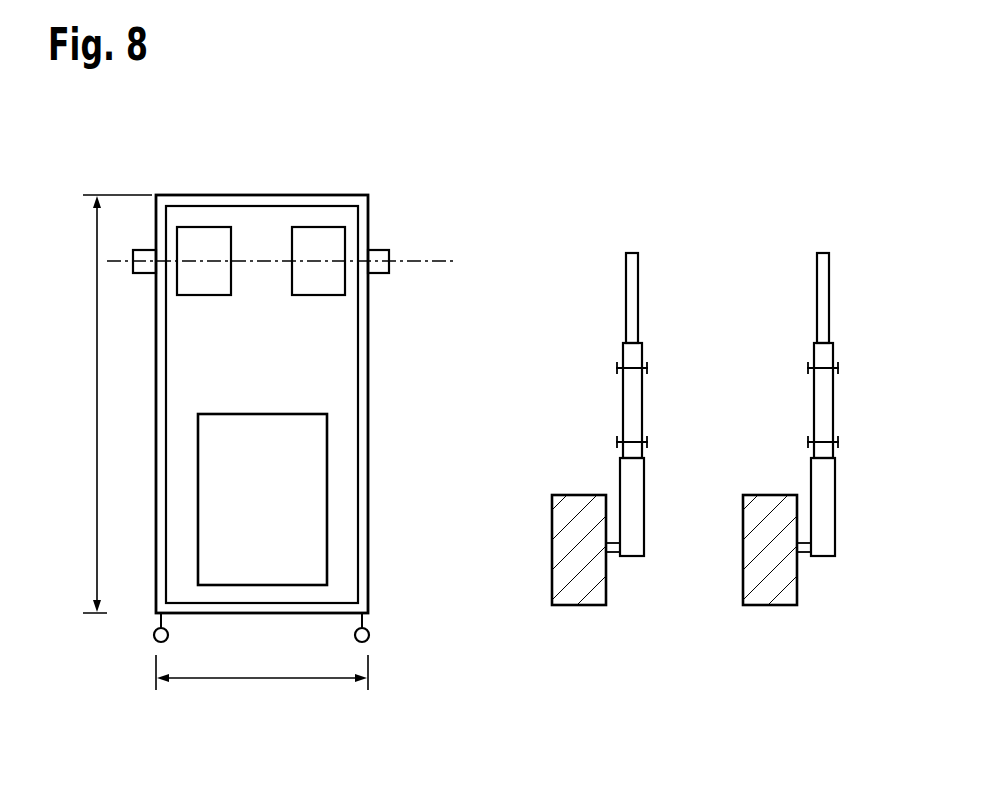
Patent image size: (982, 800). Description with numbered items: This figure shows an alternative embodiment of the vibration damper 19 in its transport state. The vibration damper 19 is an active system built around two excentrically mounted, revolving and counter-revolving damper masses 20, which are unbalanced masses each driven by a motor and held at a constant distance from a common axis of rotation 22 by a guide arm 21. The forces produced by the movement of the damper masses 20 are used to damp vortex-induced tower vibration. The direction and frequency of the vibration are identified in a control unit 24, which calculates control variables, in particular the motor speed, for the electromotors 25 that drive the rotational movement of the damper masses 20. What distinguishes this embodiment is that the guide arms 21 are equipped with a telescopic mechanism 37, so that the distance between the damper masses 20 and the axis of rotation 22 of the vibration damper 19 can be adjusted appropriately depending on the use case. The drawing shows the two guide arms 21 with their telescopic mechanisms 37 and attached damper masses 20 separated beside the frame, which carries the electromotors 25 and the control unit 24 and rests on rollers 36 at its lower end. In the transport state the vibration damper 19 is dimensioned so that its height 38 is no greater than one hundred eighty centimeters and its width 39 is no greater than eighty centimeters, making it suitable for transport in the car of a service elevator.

The vibration damper 19 is at (412, 369).
The damper mass 20 is at (580, 606).
The guide arm 21 is at (639, 290).
The axis of rotation 22 is at (439, 260).
The control unit 24 is at (264, 414).
The electromotor 25 is at (203, 227).
The roller 36 is at (154, 635).
The telescopic mechanism 37 is at (643, 405).
The height 38 is at (96, 405).
The width 39 is at (262, 678).